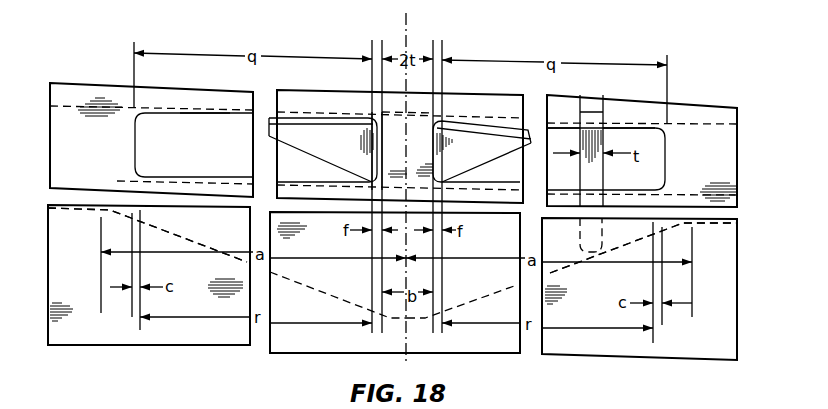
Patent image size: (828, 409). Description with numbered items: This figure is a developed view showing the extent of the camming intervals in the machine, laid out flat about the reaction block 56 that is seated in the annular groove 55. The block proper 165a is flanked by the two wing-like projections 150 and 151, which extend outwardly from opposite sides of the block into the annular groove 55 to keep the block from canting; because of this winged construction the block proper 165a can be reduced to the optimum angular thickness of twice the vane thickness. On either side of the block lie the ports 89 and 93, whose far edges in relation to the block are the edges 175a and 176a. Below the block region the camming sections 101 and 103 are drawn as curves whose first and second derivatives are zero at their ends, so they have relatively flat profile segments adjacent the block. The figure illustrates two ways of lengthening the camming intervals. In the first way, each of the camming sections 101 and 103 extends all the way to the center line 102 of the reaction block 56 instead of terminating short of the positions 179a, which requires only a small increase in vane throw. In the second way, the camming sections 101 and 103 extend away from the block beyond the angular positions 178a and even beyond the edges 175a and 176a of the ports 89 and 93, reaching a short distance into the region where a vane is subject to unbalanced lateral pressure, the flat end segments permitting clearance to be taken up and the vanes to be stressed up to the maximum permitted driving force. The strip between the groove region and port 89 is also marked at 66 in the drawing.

The center line 102 is at (406, 18).
The port 93 is at (207, 113).
The edge of port 176a is at (137, 145).
The wing-like projection 151 is at (310, 133).
The wing-like projection 150 is at (480, 135).
The positions 179a is at (440, 153).
The block proper 165a is at (423, 128).
The reaction block 56 is at (400, 160).
The port 89 is at (566, 130).
The edge of port 175a is at (662, 158).
The annular groove 55 is at (573, 182).
The strip portion 66 is at (590, 170).
The angular positions 178a is at (652, 282).
The camming section 103 is at (308, 289).
The camming section 101 is at (468, 297).